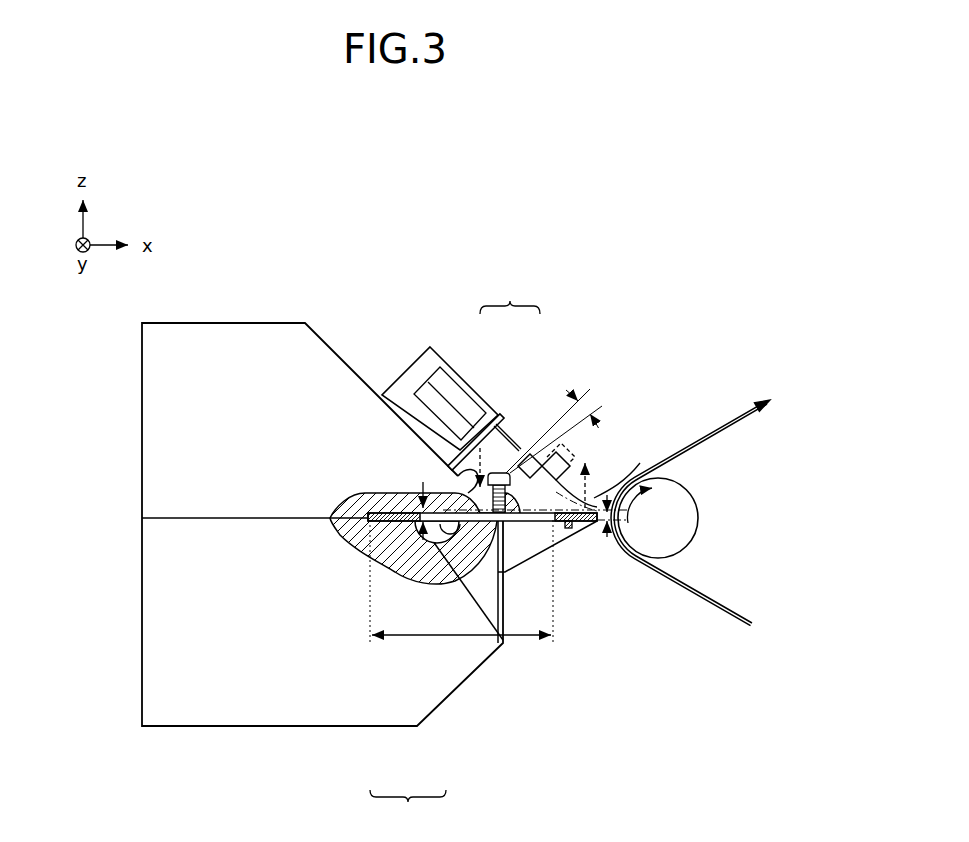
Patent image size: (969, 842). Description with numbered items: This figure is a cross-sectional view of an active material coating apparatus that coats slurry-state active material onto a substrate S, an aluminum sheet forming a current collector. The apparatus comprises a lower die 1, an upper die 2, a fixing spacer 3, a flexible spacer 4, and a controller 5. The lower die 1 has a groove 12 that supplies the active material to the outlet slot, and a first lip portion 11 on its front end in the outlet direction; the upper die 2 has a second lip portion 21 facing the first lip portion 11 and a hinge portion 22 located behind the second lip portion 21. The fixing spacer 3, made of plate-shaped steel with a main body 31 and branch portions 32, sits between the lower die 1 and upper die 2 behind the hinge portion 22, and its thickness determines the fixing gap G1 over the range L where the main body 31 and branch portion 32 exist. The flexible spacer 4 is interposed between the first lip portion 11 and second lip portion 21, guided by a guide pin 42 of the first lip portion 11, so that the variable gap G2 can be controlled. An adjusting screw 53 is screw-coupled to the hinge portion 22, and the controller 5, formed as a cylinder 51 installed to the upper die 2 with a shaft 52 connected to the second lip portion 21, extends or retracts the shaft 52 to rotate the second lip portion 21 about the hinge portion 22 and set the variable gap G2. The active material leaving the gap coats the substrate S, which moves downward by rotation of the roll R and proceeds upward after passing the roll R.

The lower die 1 is at (215, 712).
The upper die 2 is at (214, 340).
The fixing spacer 3 is at (408, 809).
The flexible spacer 4 is at (561, 522).
The controller 5 is at (510, 296).
The first lip portion 11 is at (578, 527).
The groove 12 is at (500, 617).
The second lip portion 21 is at (640, 463).
The hinge portion 22 is at (455, 467).
The main body 31 is at (400, 522).
The branch portion 32 is at (440, 527).
The guide pin 42 is at (570, 529).
The cylinder 51 is at (455, 388).
The shaft 52 is at (512, 430).
The adjusting screw 53 is at (526, 495).
The fixing gap G1 is at (413, 502).
The variable gap G2 is at (613, 532).
The range L is at (461, 592).
The roll R is at (680, 518).
The substrate S is at (707, 433).